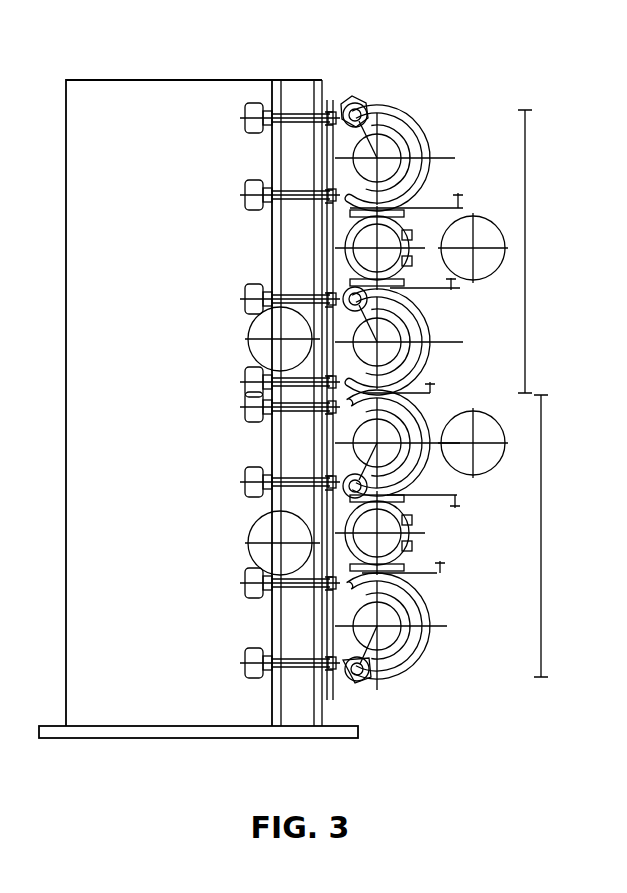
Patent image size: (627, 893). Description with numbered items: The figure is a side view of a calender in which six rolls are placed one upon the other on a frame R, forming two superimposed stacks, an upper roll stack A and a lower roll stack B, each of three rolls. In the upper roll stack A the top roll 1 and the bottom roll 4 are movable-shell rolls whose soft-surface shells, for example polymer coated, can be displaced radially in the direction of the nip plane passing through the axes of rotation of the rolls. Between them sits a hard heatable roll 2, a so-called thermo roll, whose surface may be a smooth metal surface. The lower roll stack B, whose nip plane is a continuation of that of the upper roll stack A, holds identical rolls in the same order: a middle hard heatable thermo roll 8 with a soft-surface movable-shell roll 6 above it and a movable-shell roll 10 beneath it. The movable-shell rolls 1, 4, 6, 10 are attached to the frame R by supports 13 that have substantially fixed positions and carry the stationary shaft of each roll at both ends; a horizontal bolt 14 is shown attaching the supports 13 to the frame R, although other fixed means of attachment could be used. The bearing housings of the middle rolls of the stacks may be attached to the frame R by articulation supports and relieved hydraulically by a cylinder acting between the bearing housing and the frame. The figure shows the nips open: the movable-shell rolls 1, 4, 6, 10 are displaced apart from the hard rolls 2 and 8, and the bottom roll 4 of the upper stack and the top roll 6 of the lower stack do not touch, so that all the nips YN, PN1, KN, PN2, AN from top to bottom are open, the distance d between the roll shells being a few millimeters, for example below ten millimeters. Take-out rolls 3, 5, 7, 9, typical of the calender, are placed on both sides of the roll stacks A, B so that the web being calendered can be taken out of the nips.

The frame R is at (174, 80).
The horizontal bolt 14 is at (293, 80).
The support 13 is at (395, 134).
The top roll 1 is at (416, 124).
The hard heatable roll 2 is at (346, 262).
The take-out roll 3 is at (489, 222).
The bottom roll 4 is at (427, 360).
The take-out roll 5 is at (248, 339).
The movable-shell roll 6 is at (420, 464).
The take-out roll 7 is at (494, 466).
The thermo roll 8 is at (417, 542).
The take-out roll 9 is at (248, 545).
The movable-shell roll 10 is at (412, 663).
The distance d is at (415, 386).
The nip YN is at (440, 207).
The nip PN1 is at (425, 292).
The nip KN is at (433, 411).
The nip PN2 is at (417, 503).
The nip AN is at (425, 583).
The upper roll stack A is at (535, 251).
The lower roll stack B is at (549, 536).